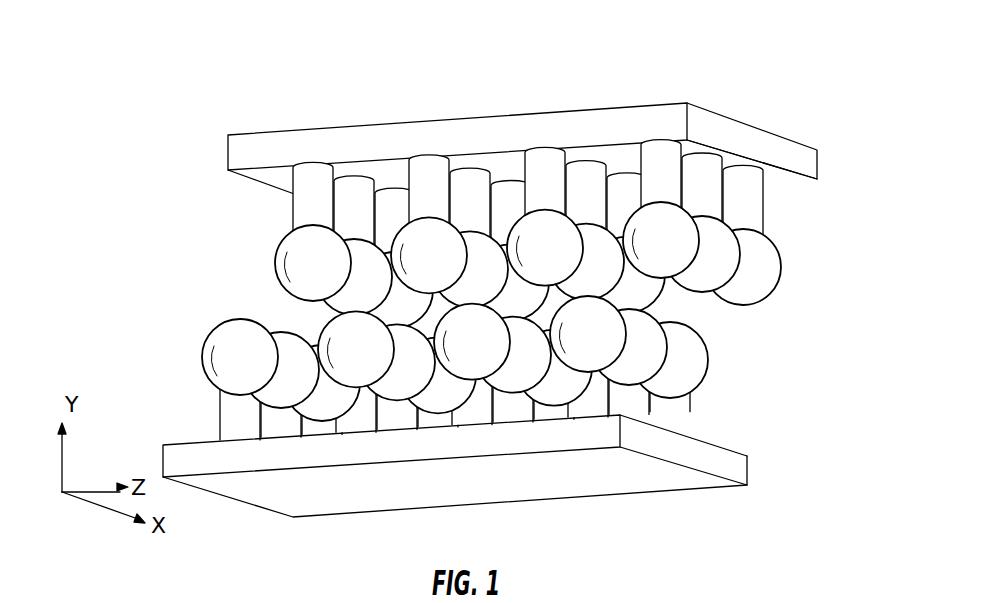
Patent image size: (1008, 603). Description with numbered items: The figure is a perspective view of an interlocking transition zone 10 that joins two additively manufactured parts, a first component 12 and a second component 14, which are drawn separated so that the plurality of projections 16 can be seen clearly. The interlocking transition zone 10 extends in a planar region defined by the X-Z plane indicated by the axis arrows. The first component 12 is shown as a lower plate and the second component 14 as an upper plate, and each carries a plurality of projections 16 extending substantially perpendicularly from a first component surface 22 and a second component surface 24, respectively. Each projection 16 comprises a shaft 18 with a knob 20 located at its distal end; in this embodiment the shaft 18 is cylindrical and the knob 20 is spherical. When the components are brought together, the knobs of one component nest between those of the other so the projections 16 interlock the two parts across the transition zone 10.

The interlocking transition zone 10 is at (788, 68).
The first component 12 is at (723, 467).
The second component 14 is at (808, 164).
The projections 16 is at (693, 357).
The shaft 18 is at (313, 199).
The knob 20 is at (293, 262).
The first component surface 22 is at (735, 450).
The second component surface 24 is at (787, 184).